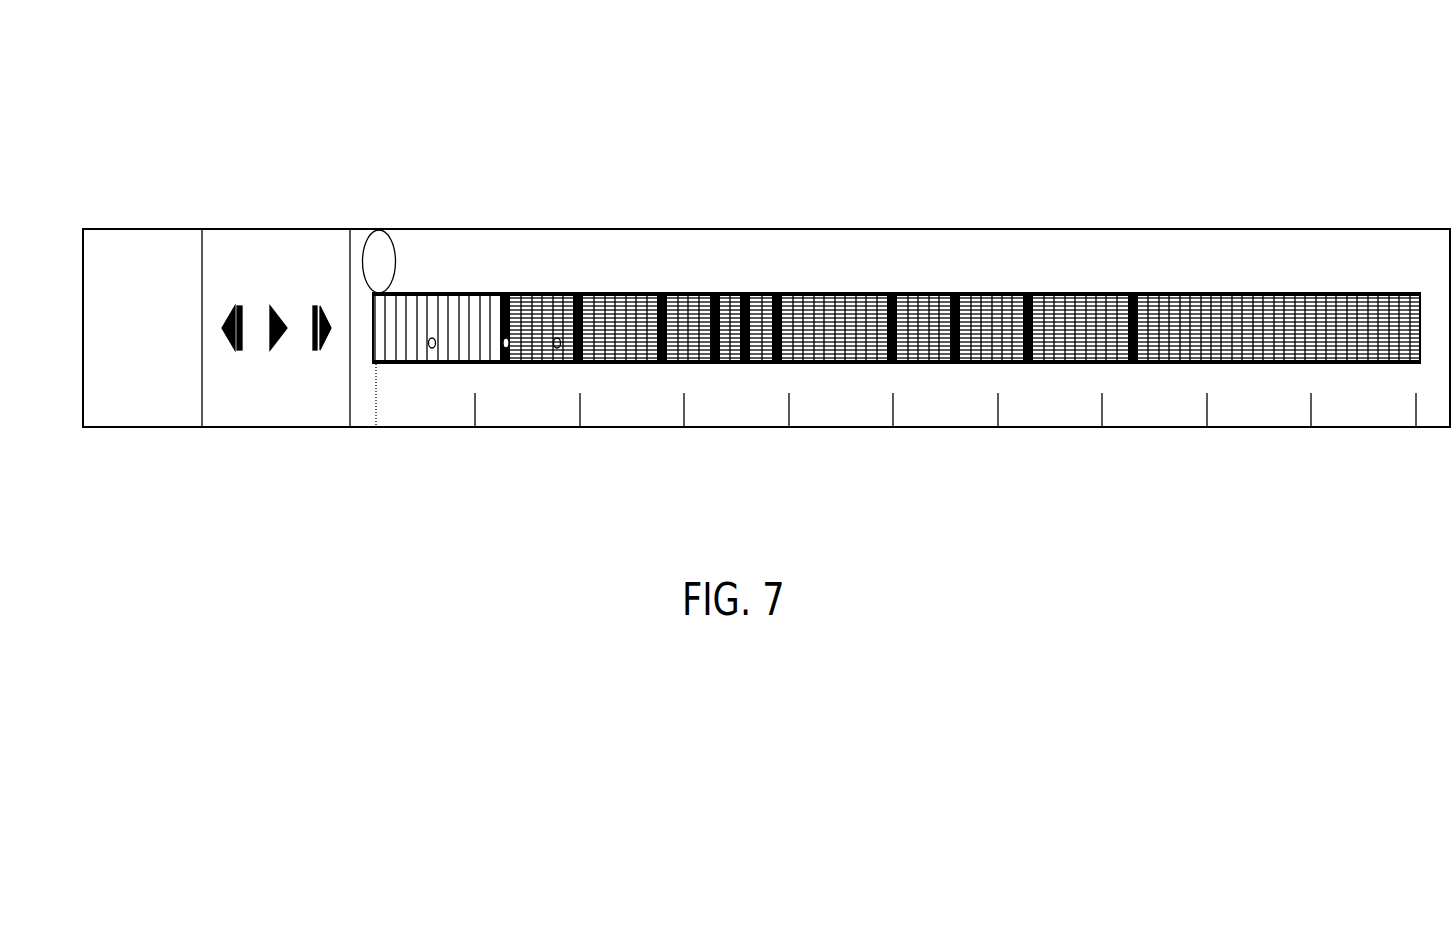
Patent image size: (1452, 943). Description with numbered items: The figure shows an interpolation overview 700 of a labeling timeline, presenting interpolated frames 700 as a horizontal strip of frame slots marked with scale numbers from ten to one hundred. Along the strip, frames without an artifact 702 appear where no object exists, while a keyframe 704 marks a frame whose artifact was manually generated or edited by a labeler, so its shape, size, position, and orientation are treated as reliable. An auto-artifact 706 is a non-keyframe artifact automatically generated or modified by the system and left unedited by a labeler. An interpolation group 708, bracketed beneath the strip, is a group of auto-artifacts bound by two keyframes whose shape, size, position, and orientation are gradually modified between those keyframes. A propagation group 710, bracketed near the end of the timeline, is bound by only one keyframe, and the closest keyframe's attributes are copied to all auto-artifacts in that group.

The interpolation overview 700 is at (798, 110).
The artifact 702 is at (432, 364).
The keyframe 704 is at (505, 364).
The auto-artifact 706 is at (557, 364).
The interpolation group 708 is at (887, 365).
The propagation group 710 is at (1420, 365).